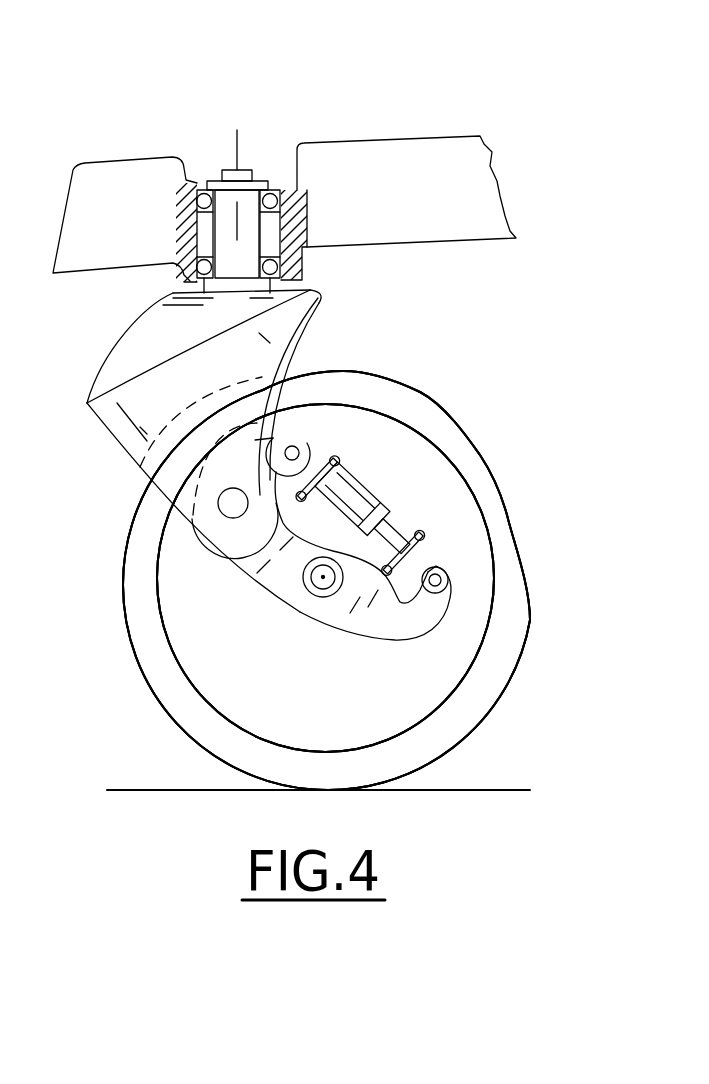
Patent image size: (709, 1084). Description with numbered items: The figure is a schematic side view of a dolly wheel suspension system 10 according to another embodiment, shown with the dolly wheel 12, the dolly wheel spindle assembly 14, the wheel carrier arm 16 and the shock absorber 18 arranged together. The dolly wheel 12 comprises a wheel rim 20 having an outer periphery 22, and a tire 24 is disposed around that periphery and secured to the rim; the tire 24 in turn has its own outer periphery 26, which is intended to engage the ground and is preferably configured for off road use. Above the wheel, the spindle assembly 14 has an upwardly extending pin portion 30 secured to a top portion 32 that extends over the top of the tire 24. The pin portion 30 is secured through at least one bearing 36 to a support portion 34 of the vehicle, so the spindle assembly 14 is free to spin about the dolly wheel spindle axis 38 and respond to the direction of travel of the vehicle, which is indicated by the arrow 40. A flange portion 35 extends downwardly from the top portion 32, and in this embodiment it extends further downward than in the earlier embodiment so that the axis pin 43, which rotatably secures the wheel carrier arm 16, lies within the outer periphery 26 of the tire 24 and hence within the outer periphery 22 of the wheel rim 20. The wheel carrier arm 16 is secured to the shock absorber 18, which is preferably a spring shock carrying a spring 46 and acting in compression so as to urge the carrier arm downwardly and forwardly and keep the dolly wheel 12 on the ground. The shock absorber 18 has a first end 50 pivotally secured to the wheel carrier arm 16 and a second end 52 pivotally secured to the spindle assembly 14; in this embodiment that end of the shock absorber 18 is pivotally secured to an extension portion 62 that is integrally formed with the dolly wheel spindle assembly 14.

The wheel suspension system 10 is at (392, 92).
The dolly wheel 12 is at (359, 580).
The dolly wheel spindle assembly 14 is at (270, 333).
The wheel carrier arm 16 is at (282, 579).
The shock absorber 18 is at (350, 487).
The wheel rim 20 is at (352, 693).
The outer periphery 22 is at (437, 445).
The tire 24 is at (520, 570).
The outer periphery 26 is at (519, 507).
The pin portion 30 is at (222, 228).
The top portion 32 is at (310, 292).
The support portion 34 is at (445, 138).
The flange portion 35 is at (138, 459).
The bearing 36 is at (292, 208).
The dolly wheel spindle axis 38 is at (237, 140).
The arrow 40 is at (582, 744).
The axis pin 43 is at (230, 509).
The spring 46 is at (408, 524).
The first end 50 is at (443, 585).
The second end 52 is at (306, 444).
The extension portion 62 is at (298, 368).